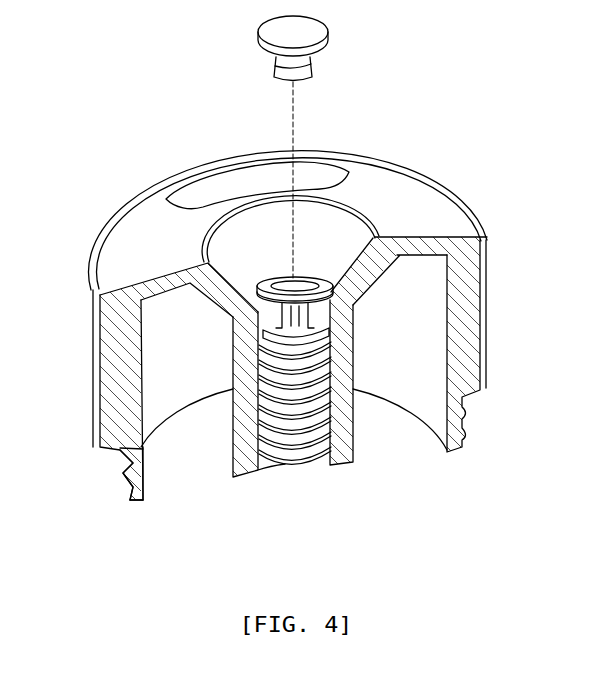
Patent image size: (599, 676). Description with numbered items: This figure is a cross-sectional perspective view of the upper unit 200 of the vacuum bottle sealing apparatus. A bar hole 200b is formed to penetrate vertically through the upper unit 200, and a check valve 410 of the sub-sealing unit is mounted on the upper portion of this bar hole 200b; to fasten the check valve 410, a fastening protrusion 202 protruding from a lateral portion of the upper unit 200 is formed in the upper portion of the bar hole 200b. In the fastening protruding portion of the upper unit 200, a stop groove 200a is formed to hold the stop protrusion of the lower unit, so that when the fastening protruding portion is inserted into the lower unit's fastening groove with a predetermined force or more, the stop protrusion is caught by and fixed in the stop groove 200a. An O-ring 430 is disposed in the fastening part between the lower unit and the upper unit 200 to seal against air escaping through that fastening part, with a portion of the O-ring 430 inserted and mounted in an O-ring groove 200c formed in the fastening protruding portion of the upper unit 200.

The upper unit 200 is at (297, 336).
The stop groove 200a is at (138, 493).
The bar hole 200b is at (303, 459).
The O-ring groove 200c is at (143, 463).
The fastening protrusion 202 is at (305, 322).
The check valve 410 is at (328, 33).
The O-ring 430 is at (127, 465).